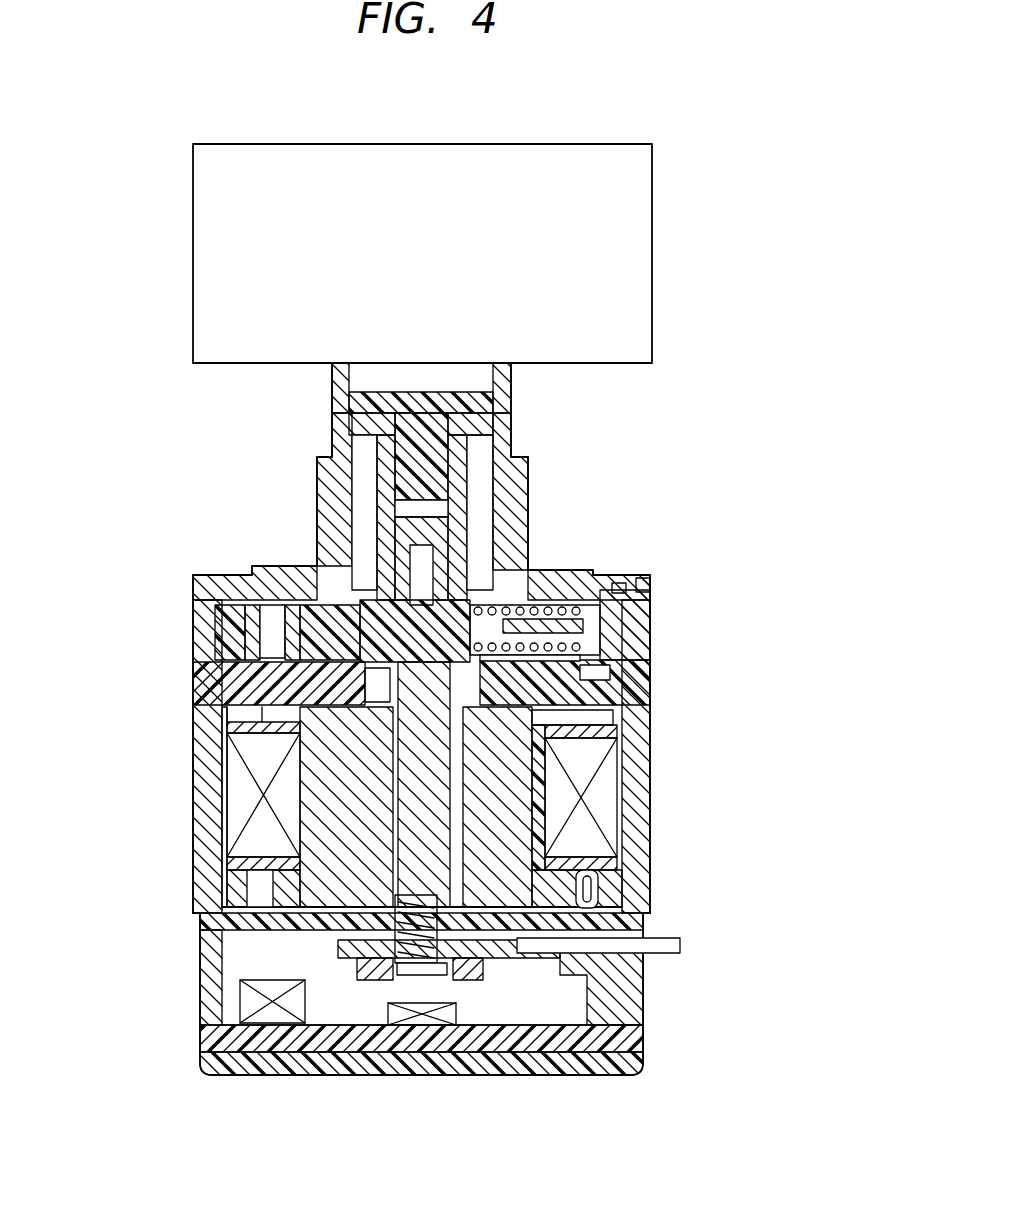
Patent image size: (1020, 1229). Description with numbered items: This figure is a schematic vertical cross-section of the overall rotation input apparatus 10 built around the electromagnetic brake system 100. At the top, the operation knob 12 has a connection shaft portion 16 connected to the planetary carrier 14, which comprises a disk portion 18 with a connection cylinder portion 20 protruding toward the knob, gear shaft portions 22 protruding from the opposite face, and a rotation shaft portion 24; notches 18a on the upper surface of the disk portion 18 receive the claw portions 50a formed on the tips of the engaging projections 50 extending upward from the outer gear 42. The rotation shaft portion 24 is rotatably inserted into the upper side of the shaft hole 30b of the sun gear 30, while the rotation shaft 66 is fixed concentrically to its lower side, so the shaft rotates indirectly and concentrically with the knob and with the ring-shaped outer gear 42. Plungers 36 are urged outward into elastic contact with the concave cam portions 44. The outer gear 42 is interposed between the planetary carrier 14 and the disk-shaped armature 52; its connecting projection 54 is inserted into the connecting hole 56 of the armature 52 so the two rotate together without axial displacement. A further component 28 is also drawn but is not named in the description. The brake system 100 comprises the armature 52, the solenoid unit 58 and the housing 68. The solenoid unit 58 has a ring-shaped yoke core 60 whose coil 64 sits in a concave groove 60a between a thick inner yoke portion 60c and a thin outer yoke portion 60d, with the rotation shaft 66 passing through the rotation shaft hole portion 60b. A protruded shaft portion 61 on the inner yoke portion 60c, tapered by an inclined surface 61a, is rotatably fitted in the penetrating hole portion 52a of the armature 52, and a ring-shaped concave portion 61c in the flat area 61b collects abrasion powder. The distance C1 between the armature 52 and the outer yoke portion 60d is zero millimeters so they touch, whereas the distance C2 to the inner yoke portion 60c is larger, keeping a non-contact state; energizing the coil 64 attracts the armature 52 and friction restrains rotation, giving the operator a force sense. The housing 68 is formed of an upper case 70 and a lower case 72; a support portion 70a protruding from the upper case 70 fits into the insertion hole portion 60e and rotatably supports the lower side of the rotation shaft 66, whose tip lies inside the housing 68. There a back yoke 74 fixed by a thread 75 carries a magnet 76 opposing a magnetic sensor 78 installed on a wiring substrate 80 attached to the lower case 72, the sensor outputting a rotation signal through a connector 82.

The rotation input apparatus 10 is at (593, 93).
The operation knob 12 is at (650, 143).
The planetary carrier 14 is at (128, 475).
The connection shaft portion 16 is at (413, 437).
The disk portion 18 is at (235, 590).
The notches 18a is at (630, 591).
The connection cylinder portion 20 is at (378, 471).
The gear shaft portions 22 is at (250, 600).
The rotation shaft portion 24 is at (388, 580).
The bushing 28 is at (258, 641).
The sun gear 30 is at (510, 540).
The shaft hole 30b is at (300, 662).
The plungers 36 is at (625, 641).
The outer gear 42 is at (300, 646).
The concave cam portions 44 is at (590, 608).
The engaging projections 50 is at (650, 604).
The claw portions 50a is at (650, 587).
The armature 52 is at (650, 696).
The penetrating hole portion 52a is at (640, 663).
The connecting projection 54 is at (640, 707).
The connecting hole 56 is at (630, 691).
The solenoid unit 58 is at (735, 758).
The yoke core 60 is at (655, 791).
The concave groove 60a is at (623, 819).
The rotation shaft hole portion 60b is at (575, 863).
The inner yoke portion 60c is at (528, 759).
The outer yoke portion 60d is at (578, 884).
The insertion hole portion 60e is at (568, 913).
The protruded shaft portion 61 is at (530, 586).
The inclined surface 61a is at (300, 691).
The flat area 61b is at (240, 743).
The concave portion 61c is at (262, 713).
The coil 64 is at (575, 841).
The rotation shaft 66 is at (408, 819).
The housing 68 is at (735, 950).
The upper case 70 is at (612, 1018).
The support portion 70a is at (672, 951).
The lower case 72 is at (632, 1043).
The back yoke 74 is at (522, 1031).
The thread 75 is at (400, 968).
The magnet 76 is at (365, 1006).
The magnetic sensor 78 is at (418, 1013).
The wiring substrate 80 is at (455, 1028).
The connector 82 is at (240, 996).
The electromagnetic brake system 100 is at (775, 758).
The distance between armature and outer yoke portion C1 is at (195, 709).
The distance between armature and inner yoke portion C2 is at (88, 730).